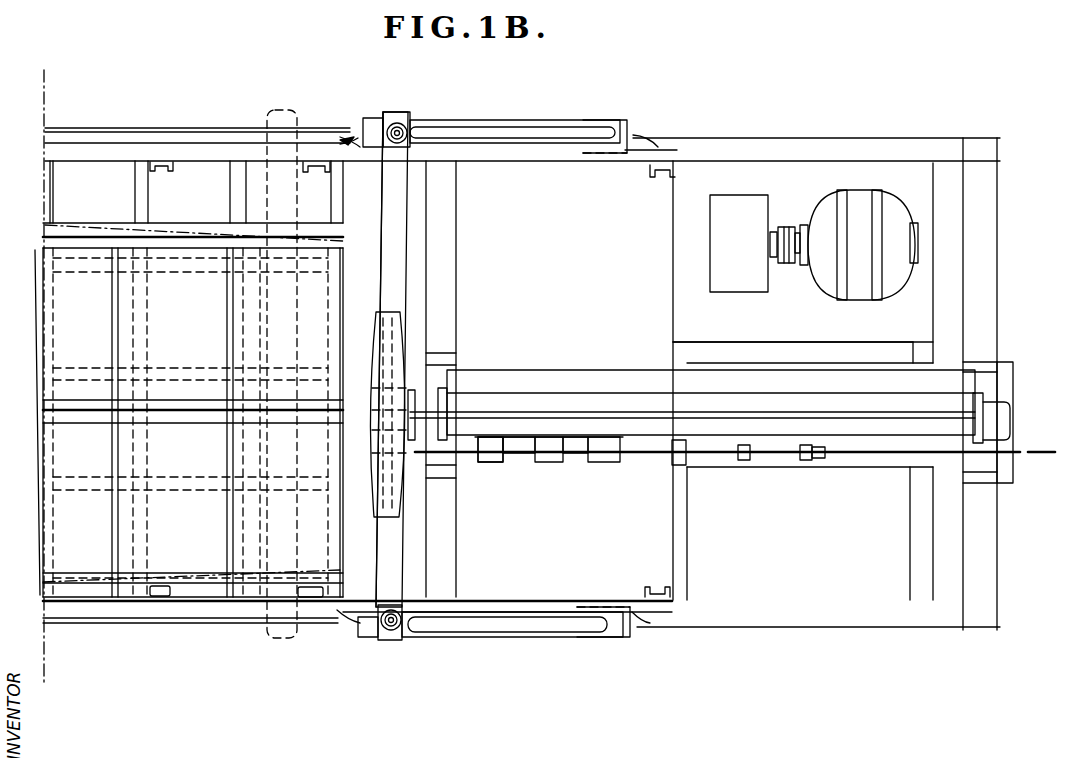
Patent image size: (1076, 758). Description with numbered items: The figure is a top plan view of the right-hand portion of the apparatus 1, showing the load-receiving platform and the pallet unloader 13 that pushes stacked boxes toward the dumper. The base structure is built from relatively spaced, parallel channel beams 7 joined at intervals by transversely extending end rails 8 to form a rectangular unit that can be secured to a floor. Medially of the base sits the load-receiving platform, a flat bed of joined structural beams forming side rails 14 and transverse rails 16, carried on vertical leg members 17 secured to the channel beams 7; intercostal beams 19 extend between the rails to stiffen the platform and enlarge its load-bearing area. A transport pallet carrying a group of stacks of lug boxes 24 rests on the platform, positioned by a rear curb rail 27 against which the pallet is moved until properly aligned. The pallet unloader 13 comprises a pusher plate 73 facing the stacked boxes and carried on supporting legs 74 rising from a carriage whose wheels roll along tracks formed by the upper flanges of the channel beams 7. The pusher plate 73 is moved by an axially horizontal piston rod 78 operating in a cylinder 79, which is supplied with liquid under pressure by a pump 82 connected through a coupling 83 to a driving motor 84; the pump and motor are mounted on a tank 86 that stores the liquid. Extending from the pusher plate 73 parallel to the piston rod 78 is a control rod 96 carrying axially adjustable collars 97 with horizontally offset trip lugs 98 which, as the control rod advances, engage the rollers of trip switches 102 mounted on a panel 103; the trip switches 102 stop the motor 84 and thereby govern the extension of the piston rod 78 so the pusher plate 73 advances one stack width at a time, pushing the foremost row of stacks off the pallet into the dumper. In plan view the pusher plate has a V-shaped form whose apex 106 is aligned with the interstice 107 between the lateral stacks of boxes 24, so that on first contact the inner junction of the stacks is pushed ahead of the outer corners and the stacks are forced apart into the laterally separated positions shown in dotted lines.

The lift truck 1 is at (36, 324).
The channel beams 7 is at (797, 146).
The end rails 8 is at (990, 313).
The pallet unloader 13 is at (420, 247).
The side rails 14 is at (200, 600).
The transverse rails 16 is at (340, 204).
The vertical leg members 17 is at (170, 170).
The intercostal beams 19 is at (305, 367).
The lug boxes 24 is at (83, 248).
The rear curb rail 27 is at (275, 233).
The pusher plate 73 is at (378, 262).
The supporting legs 74 is at (400, 122).
The piston rod 78 is at (437, 411).
The cylinder 79 is at (603, 404).
The pump 82 is at (746, 232).
The coupling 83 is at (785, 228).
The motor 84 is at (857, 290).
The tank 86 is at (790, 328).
The control rod 96 is at (636, 456).
The collars 97 is at (683, 446).
The trip lugs 98 is at (688, 462).
The trip switches 102 is at (499, 464).
The panel 103 is at (580, 440).
The apex 106 is at (370, 410).
The interstice 107 is at (316, 408).